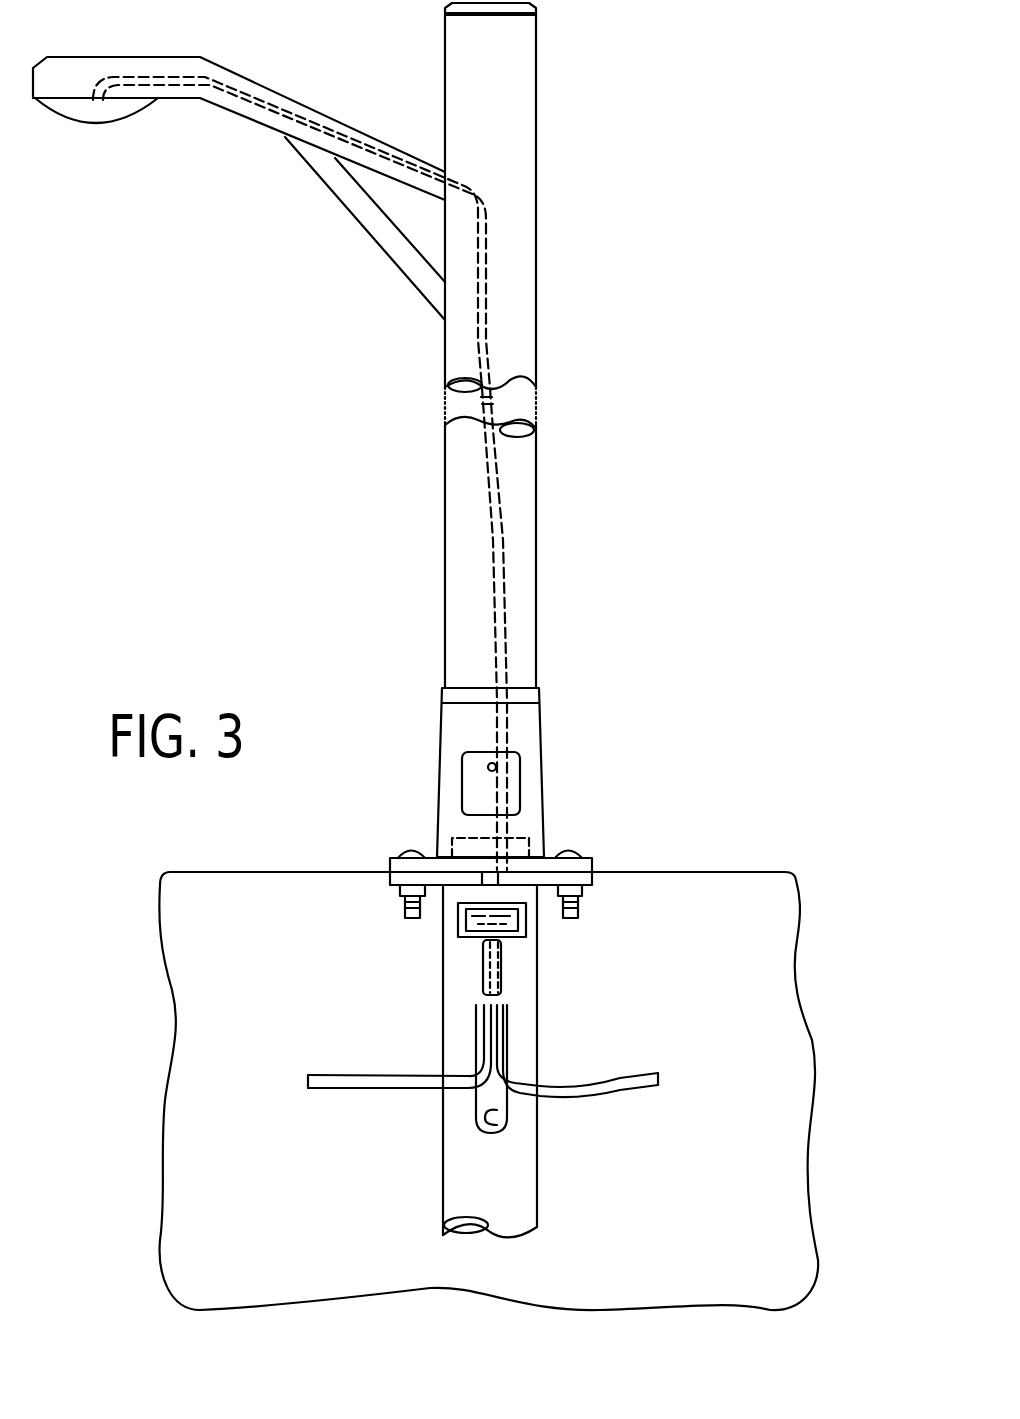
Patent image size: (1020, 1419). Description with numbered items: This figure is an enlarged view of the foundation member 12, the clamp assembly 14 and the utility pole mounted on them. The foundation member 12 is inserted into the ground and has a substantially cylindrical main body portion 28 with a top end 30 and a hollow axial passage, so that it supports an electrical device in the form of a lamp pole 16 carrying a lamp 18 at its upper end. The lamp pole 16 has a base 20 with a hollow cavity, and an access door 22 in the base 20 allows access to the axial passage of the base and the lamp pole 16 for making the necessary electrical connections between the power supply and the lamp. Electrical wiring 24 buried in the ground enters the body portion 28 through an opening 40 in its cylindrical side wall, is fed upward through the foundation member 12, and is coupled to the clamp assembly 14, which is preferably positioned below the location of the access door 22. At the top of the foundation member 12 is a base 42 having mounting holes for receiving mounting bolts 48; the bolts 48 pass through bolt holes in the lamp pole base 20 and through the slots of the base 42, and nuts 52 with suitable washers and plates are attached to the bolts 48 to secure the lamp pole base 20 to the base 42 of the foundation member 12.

The foundation member 12 is at (539, 978).
The clamp assembly 14 is at (531, 843).
The lamp pole 16 is at (537, 482).
The lamp 18 is at (98, 130).
The base 20 is at (541, 725).
The access door 22 is at (521, 778).
The electrical wiring 24 is at (340, 1075).
The main body portion 28 is at (517, 1182).
The top end 30 is at (443, 888).
The opening 40 is at (506, 1125).
The base 42 is at (594, 879).
The mounting bolts 48 is at (577, 846).
The nuts 52 is at (398, 888).